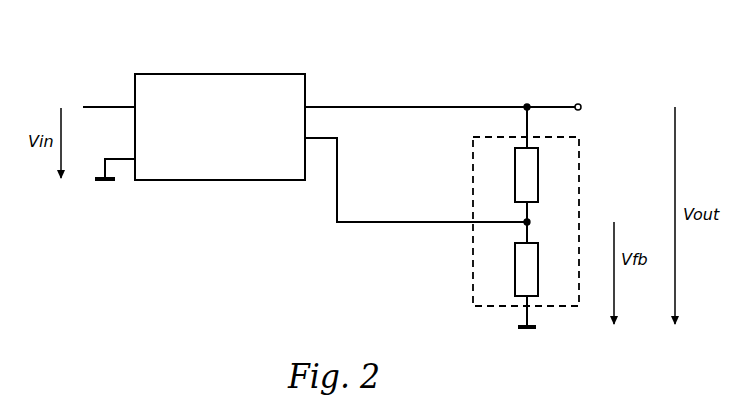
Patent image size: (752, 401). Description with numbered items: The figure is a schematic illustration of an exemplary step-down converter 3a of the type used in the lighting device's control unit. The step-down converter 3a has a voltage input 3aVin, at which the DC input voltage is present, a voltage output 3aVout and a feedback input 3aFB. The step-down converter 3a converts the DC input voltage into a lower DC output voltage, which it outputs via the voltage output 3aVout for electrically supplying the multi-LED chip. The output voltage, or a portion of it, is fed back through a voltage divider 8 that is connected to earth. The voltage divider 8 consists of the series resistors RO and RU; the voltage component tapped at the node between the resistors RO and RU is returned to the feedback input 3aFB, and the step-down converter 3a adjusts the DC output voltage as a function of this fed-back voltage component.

The step-down converter 3a is at (299, 61).
The voltage divider 8 is at (496, 217).
The voltage input 3aVin is at (106, 95).
The voltage output 3aVout is at (443, 96).
The feedback input 3aFB is at (417, 171).
The resistor RO is at (539, 164).
The resistor RU is at (539, 274).